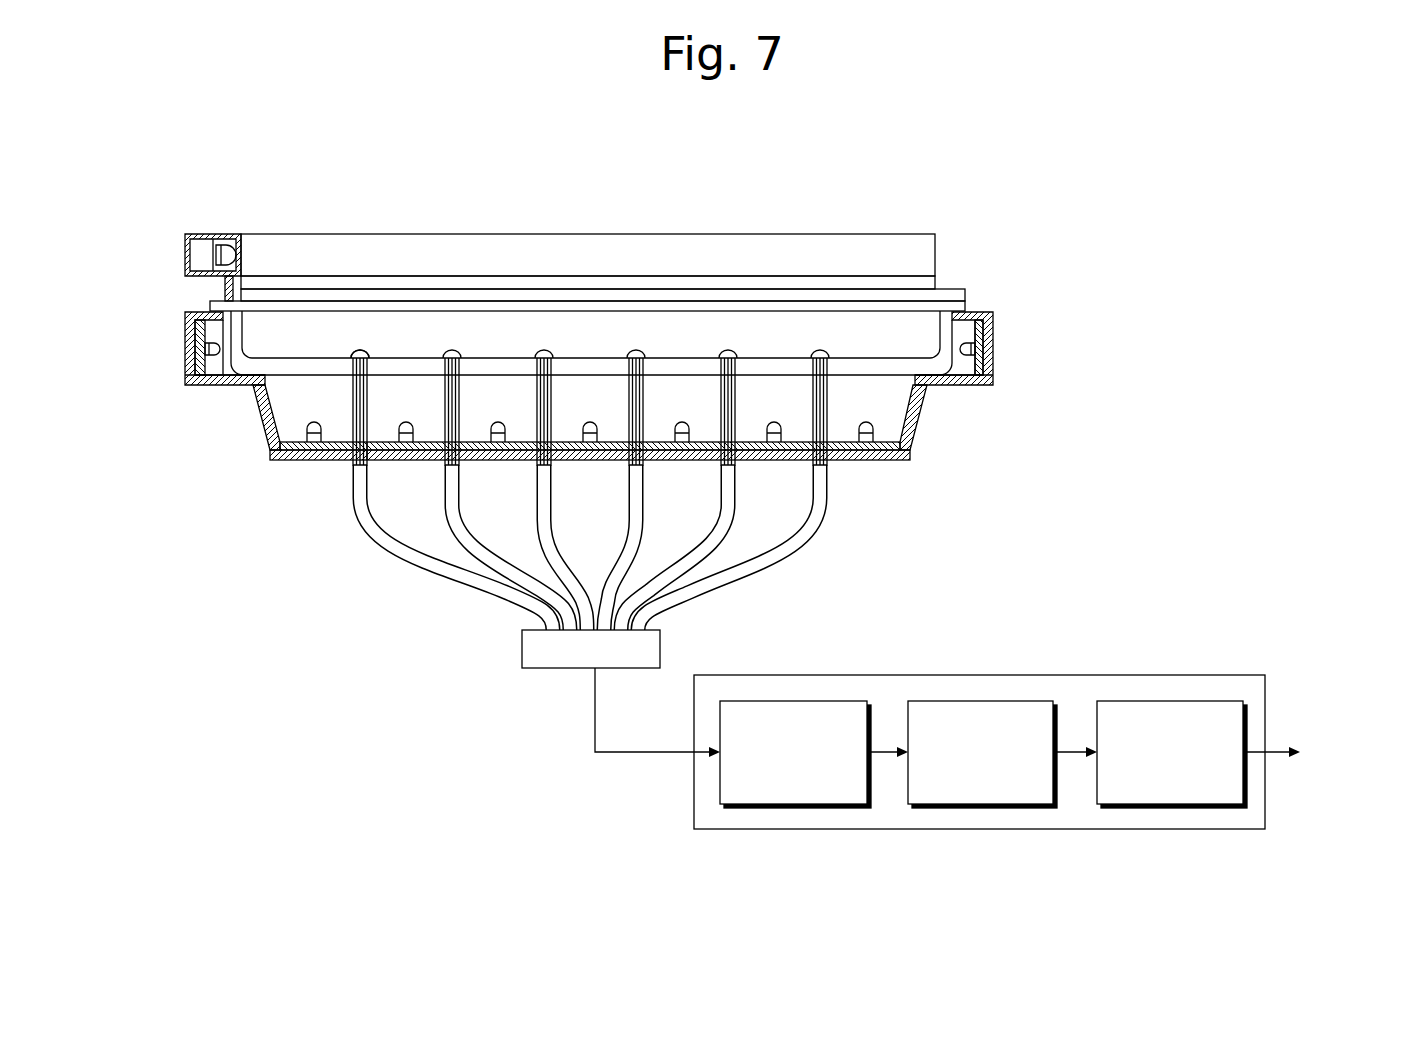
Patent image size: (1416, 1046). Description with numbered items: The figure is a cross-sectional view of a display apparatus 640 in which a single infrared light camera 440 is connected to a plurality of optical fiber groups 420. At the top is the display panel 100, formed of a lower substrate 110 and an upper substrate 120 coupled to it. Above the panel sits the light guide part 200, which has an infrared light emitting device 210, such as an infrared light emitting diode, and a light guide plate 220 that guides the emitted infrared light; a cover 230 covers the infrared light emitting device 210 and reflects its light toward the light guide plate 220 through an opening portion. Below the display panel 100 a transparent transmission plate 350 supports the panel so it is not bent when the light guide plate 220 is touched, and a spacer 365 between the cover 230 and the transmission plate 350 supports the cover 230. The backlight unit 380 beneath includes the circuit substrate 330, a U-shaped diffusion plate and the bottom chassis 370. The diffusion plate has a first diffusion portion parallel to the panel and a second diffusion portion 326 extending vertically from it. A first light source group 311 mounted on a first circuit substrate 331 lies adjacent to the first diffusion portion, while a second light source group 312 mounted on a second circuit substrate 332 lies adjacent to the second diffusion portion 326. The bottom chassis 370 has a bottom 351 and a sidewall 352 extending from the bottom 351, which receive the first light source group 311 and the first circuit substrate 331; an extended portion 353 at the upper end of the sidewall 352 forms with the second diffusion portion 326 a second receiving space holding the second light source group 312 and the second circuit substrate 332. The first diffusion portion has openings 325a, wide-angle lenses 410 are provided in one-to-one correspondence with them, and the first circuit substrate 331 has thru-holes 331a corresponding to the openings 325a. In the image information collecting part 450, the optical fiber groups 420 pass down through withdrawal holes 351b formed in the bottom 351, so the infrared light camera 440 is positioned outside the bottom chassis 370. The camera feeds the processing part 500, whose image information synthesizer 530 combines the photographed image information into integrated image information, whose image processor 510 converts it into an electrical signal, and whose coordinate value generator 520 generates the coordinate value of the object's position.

The display apparatus 640 is at (965, 166).
The light guide part 200 is at (207, 168).
The cover 230 is at (200, 233).
The infrared light emitting device 210 is at (229, 244).
The light guide plate 220 is at (320, 252).
The display panel 100 is at (1077, 242).
The upper substrate 120 is at (930, 282).
The lower substrate 110 is at (967, 296).
The transmission plate 350 is at (968, 306).
The spacer 365 is at (223, 288).
The backlight unit 380 is at (1133, 302).
The circuit substrate 330 is at (1078, 328).
The second circuit substrate 332 is at (187, 330).
The second light source group 312 is at (207, 348).
The bottom frame portion 353 is at (190, 366).
The second diffusion portion 326 is at (948, 322).
The bottom chassis 370 is at (100, 370).
The sidewall 352 is at (262, 420).
The bottom 351 is at (285, 468).
The first circuit substrate 331 is at (917, 447).
The first light source group 311 is at (882, 432).
The image information collecting part 450 is at (388, 670).
The optical fiber groups 420 is at (356, 407).
The wide-angle lenses 410 is at (350, 352).
The openings 325a is at (374, 366).
The thru-holes 331a is at (376, 446).
The withdrawal holes 351b is at (376, 454).
The infrared light camera 440 is at (522, 650).
The processing part 500 is at (1162, 675).
The image information synthesizer 530 is at (823, 808).
The image processor 510 is at (1023, 808).
The coordinate value generator 520 is at (1210, 808).